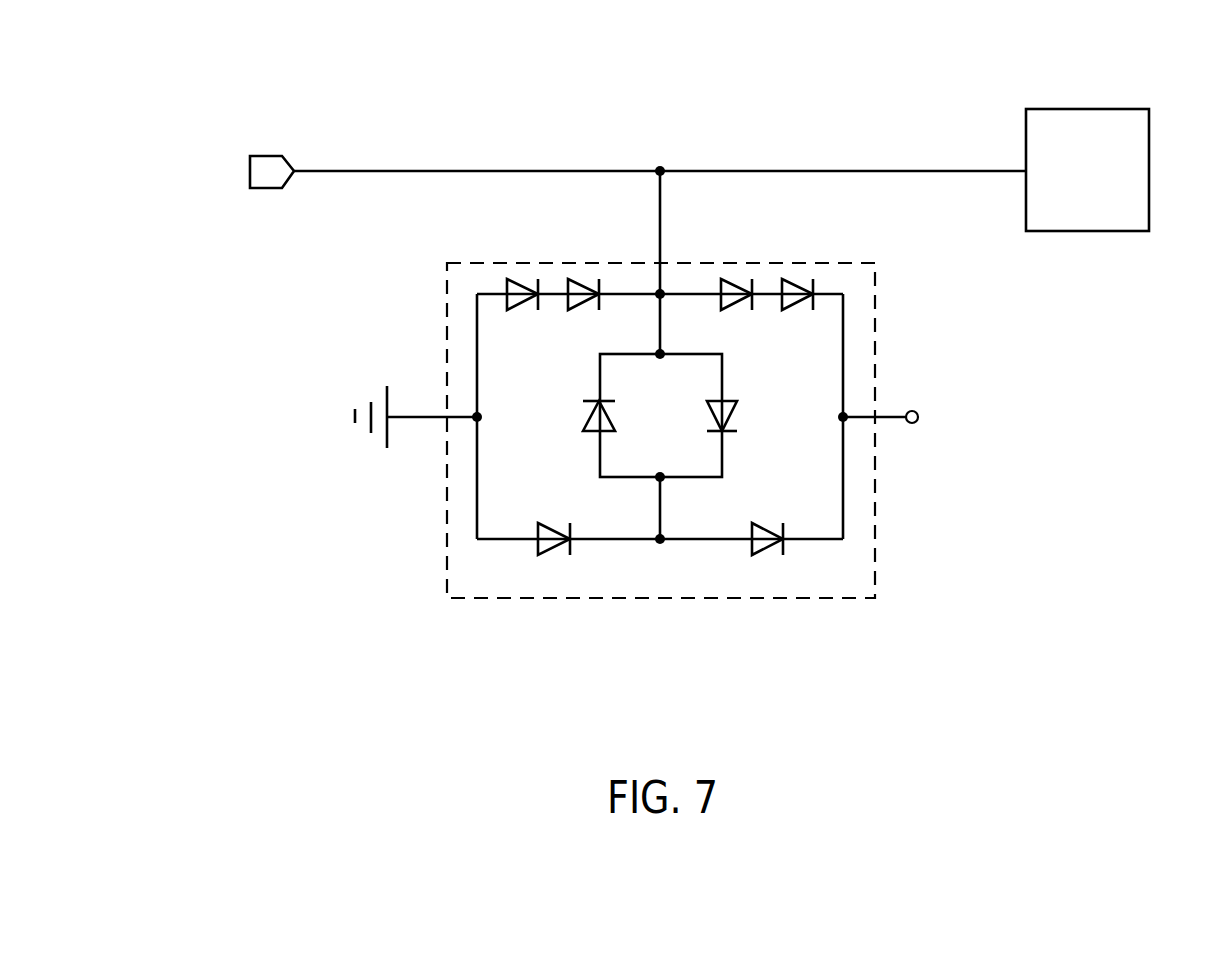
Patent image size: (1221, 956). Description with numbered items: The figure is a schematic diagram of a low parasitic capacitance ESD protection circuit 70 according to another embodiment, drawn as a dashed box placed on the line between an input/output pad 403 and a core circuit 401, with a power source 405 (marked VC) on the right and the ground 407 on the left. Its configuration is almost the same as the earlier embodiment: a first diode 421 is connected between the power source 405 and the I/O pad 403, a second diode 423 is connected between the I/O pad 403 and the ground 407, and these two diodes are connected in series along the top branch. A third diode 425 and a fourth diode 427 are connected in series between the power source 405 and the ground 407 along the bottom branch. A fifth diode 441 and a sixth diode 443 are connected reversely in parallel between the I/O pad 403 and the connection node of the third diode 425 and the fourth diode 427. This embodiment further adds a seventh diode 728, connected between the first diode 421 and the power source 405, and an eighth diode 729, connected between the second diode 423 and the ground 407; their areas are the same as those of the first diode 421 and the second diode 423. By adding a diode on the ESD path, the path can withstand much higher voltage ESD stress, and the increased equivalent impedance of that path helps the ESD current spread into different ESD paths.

The low parasitic capacitance ESD protection circuit 70 is at (876, 548).
The core circuit 401 is at (1095, 109).
The input/output pad 403 is at (258, 156).
The power source 405 is at (912, 410).
The ground 407 is at (387, 405).
The first diode 421 is at (733, 283).
The second diode 423 is at (583, 283).
The third diode 425 is at (768, 548).
The fourth diode 427 is at (548, 523).
The fifth diode 441 is at (735, 407).
The sixth diode 443 is at (592, 412).
The seventh diode 728 is at (796, 283).
The eighth diode 729 is at (521, 283).